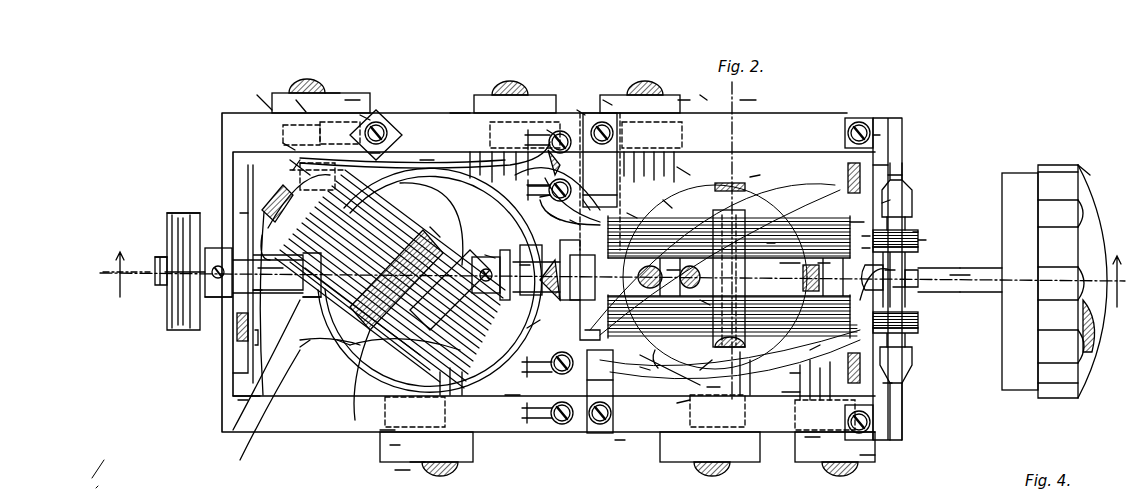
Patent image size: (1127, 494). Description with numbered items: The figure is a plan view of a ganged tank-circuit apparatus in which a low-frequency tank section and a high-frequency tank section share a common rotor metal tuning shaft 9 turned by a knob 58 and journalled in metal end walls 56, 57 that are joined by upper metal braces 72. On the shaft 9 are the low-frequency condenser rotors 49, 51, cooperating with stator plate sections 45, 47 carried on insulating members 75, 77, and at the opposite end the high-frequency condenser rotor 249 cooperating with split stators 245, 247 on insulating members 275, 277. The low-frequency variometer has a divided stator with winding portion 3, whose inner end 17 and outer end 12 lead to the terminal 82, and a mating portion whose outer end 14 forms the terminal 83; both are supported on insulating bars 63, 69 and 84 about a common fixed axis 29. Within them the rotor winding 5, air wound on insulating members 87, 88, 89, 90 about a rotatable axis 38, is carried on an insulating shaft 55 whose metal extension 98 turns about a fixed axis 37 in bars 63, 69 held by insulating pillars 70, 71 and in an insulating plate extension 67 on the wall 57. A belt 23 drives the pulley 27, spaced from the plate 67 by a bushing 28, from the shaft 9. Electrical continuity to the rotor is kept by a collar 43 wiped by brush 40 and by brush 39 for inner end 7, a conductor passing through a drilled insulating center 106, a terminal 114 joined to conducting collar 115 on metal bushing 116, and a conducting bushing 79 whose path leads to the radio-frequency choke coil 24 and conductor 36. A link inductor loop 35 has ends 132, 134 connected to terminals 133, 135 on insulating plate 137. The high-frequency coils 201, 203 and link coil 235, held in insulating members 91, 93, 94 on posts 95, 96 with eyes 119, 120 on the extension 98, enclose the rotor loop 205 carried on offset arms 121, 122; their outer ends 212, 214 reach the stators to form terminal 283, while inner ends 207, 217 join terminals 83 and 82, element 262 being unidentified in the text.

The contact spring 262 is at (267, 110).
The rotary-condenser plate section 249 is at (302, 110).
The split stator 245 is at (332, 86).
The insulating member 275 is at (353, 97).
The outer end conductor 212 is at (300, 167).
The link coil 235 is at (283, 143).
The insulating member 94 is at (293, 170).
The insulating plate extension 67 is at (240, 213).
The pulley 27 is at (167, 215).
The belt 23 is at (160, 256).
The inner end terminal 7 is at (598, 252).
The fixed axis 37 is at (140, 278).
The bushing or collar 28 is at (220, 294).
The metal end wall 57 is at (230, 387).
The eye end 120 is at (240, 400).
The rotor-winding loop 205 is at (258, 290).
The inductor-winding portion 201 is at (302, 347).
The outer end conductor 214 is at (337, 340).
The split stator 247 is at (382, 432).
The terminal 283 is at (390, 445).
The insulating member 277 is at (395, 470).
The insulating post 95 is at (410, 465).
The metal shaft extension 98 is at (283, 273).
The offset arm 121 is at (308, 300).
The insulating member 91 is at (430, 227).
The offset arm 122 is at (485, 255).
The loop end 134 is at (520, 265).
The stationary-condenser plate section 45 is at (538, 180).
The terminal 133 is at (540, 197).
The eye end 119 is at (548, 213).
The metal bushing 116 is at (570, 220).
The insulating member 93 is at (527, 328).
The insulating member 87 is at (600, 371).
The inner end conductor 207 is at (513, 393).
The upper metal brace 72 is at (450, 113).
The insulating pillar 71 is at (615, 440).
The insulating member 90 is at (677, 403).
The rotatable axis 38 is at (707, 387).
The insulating shaft 55 is at (700, 370).
The terminal 114 is at (640, 367).
The insulating bar 84 is at (700, 300).
The brush or wiping blade 39 is at (600, 184).
The rotary-condenser plate section 49 is at (677, 167).
The outer end conductor 12 is at (663, 200).
The stator inductor-winding portion 3 is at (627, 213).
The conducting collar 115 is at (667, 270).
The drilled insulating center 106 is at (767, 243).
The conducting bushing 79 is at (790, 263).
The insulating member 88 is at (750, 177).
The insulating member 89 is at (818, 263).
The link inductor loop 35 is at (860, 228).
The insulating pillar 70 is at (877, 135).
The insulating bar 63 is at (865, 165).
The metal end wall 56 is at (900, 170).
The conductor 36 is at (883, 203).
The radio-frequency choke coil 24 is at (913, 230).
The inner end terminal 17 is at (932, 228).
The rotor metal tuning shaft 9 is at (972, 272).
The brush or wiping blade 40 is at (890, 270).
The collar or bushing 43 is at (893, 287).
The stationary-condenser plate section 47 is at (883, 383).
The outer end conductor 14 is at (810, 350).
The rotor winding 5 is at (792, 383).
The rotary-condenser plate section 51 is at (745, 480).
The terminal 83 is at (813, 437).
The insulating member 77 is at (867, 453).
The terminal 82 is at (681, 101).
The common fixed axis 29 is at (758, 98).
The insulating bar 69 is at (706, 100).
The insulating member 75 is at (537, 100).
The loop end 132 is at (583, 200).
The insulating plate 137 is at (590, 83).
The terminal 135 is at (547, 130).
The inductor-winding portion 203 is at (370, 153).
The inner end conductor 217 is at (427, 160).
The insulating post 96 is at (365, 115).
The knob 58 is at (1080, 167).